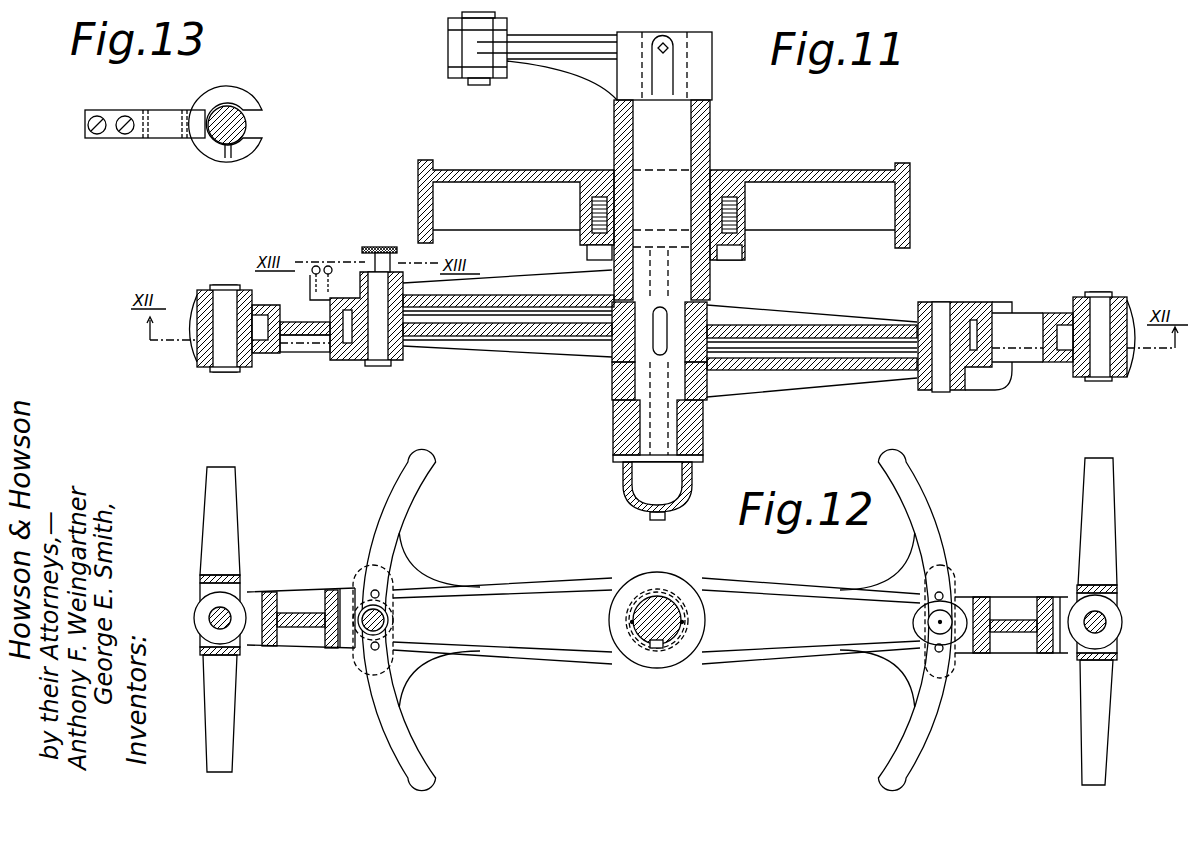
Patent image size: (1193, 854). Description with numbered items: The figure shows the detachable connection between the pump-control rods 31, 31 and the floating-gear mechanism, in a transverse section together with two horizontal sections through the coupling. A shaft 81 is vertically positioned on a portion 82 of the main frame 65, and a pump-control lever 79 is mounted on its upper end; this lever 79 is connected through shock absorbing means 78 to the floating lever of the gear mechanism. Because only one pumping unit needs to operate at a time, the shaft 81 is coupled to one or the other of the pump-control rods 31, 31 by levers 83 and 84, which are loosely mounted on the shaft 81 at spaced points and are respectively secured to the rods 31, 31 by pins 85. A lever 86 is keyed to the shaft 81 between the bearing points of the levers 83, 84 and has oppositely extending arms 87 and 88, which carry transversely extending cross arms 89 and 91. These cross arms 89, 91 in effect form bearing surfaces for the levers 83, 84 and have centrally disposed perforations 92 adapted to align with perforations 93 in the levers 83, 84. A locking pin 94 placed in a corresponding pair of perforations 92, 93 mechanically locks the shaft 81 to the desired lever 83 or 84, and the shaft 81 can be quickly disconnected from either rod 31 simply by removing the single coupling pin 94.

In FIG. 11, the pump-control rod 31 is at (196, 352).
In FIG. 12, the pump-control rod 31 is at (222, 527).
In FIG. 11, the main frame 65 is at (796, 173).
In FIG. 11, the shock absorbing means 78 is at (448, 65).
In FIG. 11, the pump-control lever 79 is at (580, 48).
In FIG. 11, the shaft 81 is at (667, 122).
In FIG. 12, the shaft 81 is at (641, 641).
In FIG. 11, the portion of the main frame 82 is at (547, 173).
In FIG. 11, the lever 83 is at (500, 291).
In FIG. 12, the lever 83 is at (311, 626).
In FIG. 11, the lever 84 is at (823, 375).
In FIG. 12, the lever 84 is at (1020, 636).
In FIG. 11, the pin 85 is at (221, 362).
In FIG. 12, the pin 85 is at (228, 615).
In FIG. 11, the lever 86 is at (730, 325).
In FIG. 12, the lever 86 is at (752, 600).
In FIG. 11, the arm 87 is at (560, 338).
In FIG. 12, the arm 87 is at (481, 633).
In FIG. 11, the arm 88 is at (820, 327).
In FIG. 12, the arm 88 is at (662, 570).
In FIG. 12, the cross arm 89 is at (393, 529).
In FIG. 12, the cross arm 91 is at (917, 506).
In FIG. 11, the perforation 92 is at (338, 360).
In FIG. 12, the perforation 92 is at (937, 626).
In FIG. 11, the perforation 93 is at (405, 275).
In FIG. 11, the locking pin 94 is at (376, 366).
In FIG. 12, the locking pin 94 is at (353, 647).
In FIG. 13, the locking pin 94 is at (220, 143).